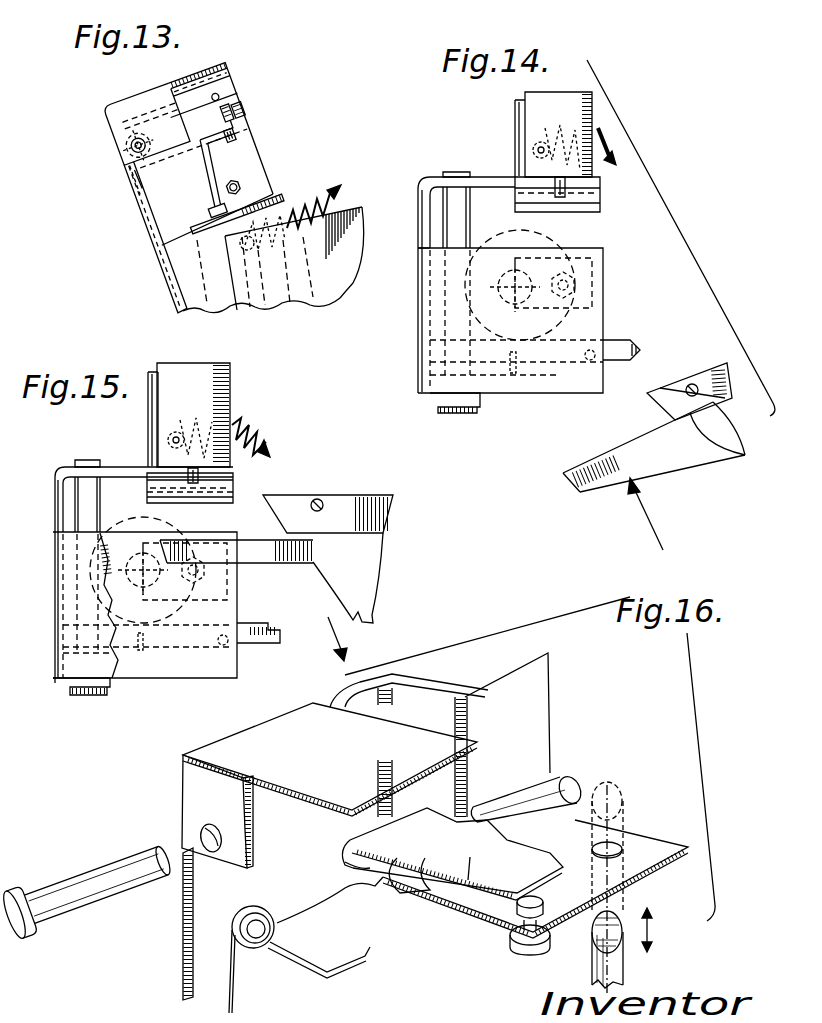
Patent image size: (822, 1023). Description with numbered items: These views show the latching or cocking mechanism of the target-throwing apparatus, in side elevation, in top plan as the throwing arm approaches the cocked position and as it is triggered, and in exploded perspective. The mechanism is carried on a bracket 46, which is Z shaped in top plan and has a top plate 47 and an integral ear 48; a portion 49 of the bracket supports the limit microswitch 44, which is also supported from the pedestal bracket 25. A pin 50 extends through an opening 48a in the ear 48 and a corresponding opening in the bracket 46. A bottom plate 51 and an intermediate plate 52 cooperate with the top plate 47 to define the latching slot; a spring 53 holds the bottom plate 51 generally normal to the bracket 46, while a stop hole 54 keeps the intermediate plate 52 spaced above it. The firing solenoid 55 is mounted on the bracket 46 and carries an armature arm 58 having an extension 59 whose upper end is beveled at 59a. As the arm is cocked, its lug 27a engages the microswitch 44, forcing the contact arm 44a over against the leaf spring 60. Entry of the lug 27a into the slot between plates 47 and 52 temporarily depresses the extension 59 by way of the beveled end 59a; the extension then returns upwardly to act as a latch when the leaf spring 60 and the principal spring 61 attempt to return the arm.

In FIG. 13, the pedestal bracket 25 is at (333, 277).
In FIG. 14, the lug 27a is at (658, 455).
In FIG. 15, the lug 27a is at (270, 563).
In FIG. 15, the limit microswitch 44 is at (230, 390).
In FIG. 14, the contact arm 44a is at (580, 187).
In FIG. 15, the contact arm 44a is at (233, 477).
In FIG. 13, the bracket 46 is at (148, 213).
In FIG. 14, the bracket 46 is at (420, 255).
In FIG. 15, the bracket 46 is at (58, 495).
In FIG. 16, the bracket 46 is at (183, 953).
In FIG. 13, the top plate 47 is at (223, 62).
In FIG. 14, the top plate 47 is at (547, 380).
In FIG. 15, the top plate 47 is at (163, 660).
In FIG. 16, the top plate 47 is at (211, 748).
In FIG. 13, the ear 48 is at (110, 108).
In FIG. 14, the ear 48 is at (427, 407).
In FIG. 15, the ear 48 is at (63, 687).
In FIG. 16, the ear 48 is at (193, 782).
In FIG. 16, the opening 48a is at (223, 840).
In FIG. 14, the bracket portion 49 is at (515, 110).
In FIG. 15, the bracket portion 49 is at (148, 398).
In FIG. 16, the bracket portion 49 is at (513, 658).
In FIG. 13, the pin 50 is at (132, 150).
In FIG. 14, the pin 50 is at (448, 172).
In FIG. 15, the pin 50 is at (80, 695).
In FIG. 16, the pin 50 is at (82, 880).
In FIG. 13, the bottom plate 51 is at (247, 120).
In FIG. 16, the bottom plate 51 is at (493, 923).
In FIG. 13, the intermediate plate 52 is at (237, 92).
In FIG. 16, the intermediate plate 52 is at (470, 857).
In FIG. 13, the spring 53 is at (132, 182).
In FIG. 15, the spring 53 is at (140, 657).
In FIG. 16, the spring 53 is at (327, 973).
In FIG. 13, the stop hole 54 is at (240, 110).
In FIG. 16, the stop hole 54 is at (523, 953).
In FIG. 13, the solenoid 55 is at (257, 197).
In FIG. 14, the solenoid 55 is at (540, 240).
In FIG. 15, the solenoid 55 is at (177, 518).
In FIG. 13, the armature arm 58 is at (213, 167).
In FIG. 13, the extension 59 is at (242, 102).
In FIG. 15, the extension 59 is at (223, 600).
In FIG. 16, the extension 59 is at (622, 955).
In FIG. 16, the beveled end 59a is at (620, 910).
In FIG. 13, the leaf spring 60 is at (227, 88).
In FIG. 15, the leaf spring 60 is at (230, 486).
In FIG. 13, the principal spring 61 is at (327, 193).
In FIG. 14, the principal spring 61 is at (610, 166).
In FIG. 15, the principal spring 61 is at (258, 428).